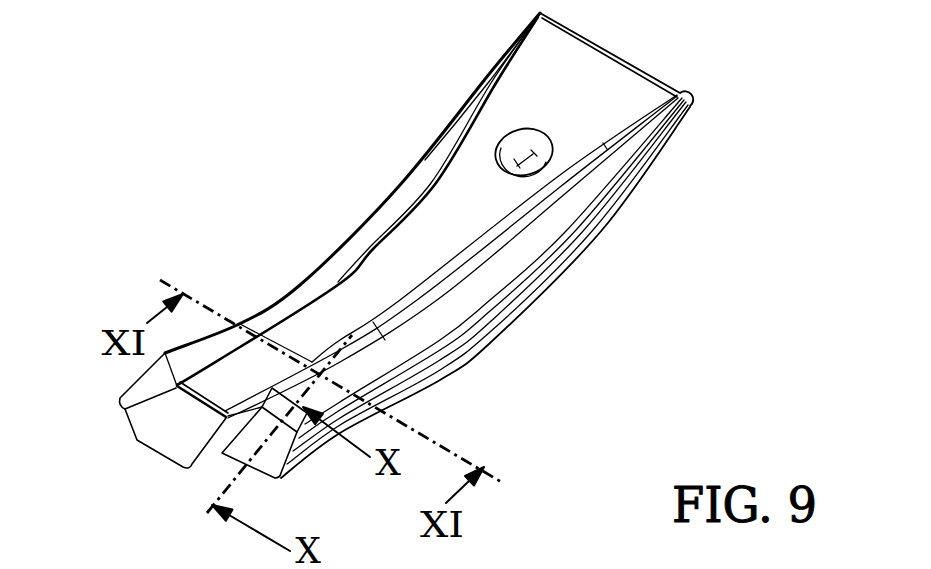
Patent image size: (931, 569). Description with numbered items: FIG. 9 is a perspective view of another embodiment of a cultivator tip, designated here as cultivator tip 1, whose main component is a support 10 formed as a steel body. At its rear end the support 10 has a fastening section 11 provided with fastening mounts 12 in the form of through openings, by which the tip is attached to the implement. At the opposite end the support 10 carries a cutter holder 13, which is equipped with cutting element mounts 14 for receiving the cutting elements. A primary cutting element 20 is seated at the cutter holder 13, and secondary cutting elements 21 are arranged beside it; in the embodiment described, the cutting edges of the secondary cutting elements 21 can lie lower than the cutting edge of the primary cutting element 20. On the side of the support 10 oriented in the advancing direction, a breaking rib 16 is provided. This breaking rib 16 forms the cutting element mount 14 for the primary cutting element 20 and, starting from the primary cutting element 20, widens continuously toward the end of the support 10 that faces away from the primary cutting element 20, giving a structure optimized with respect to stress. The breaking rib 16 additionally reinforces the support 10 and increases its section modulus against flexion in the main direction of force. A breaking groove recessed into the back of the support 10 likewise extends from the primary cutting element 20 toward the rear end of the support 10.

The spring clip 1 is at (152, 393).
The support 10 is at (382, 177).
The fastening section 11 is at (543, 80).
The fastening mounts 12 is at (520, 157).
The cutter holder 13 is at (220, 397).
The cutting element mounts 14 is at (193, 363).
The breaking rib 16 is at (360, 287).
The primary cutting element 20 is at (172, 435).
The secondary cutting elements 21 is at (234, 456).